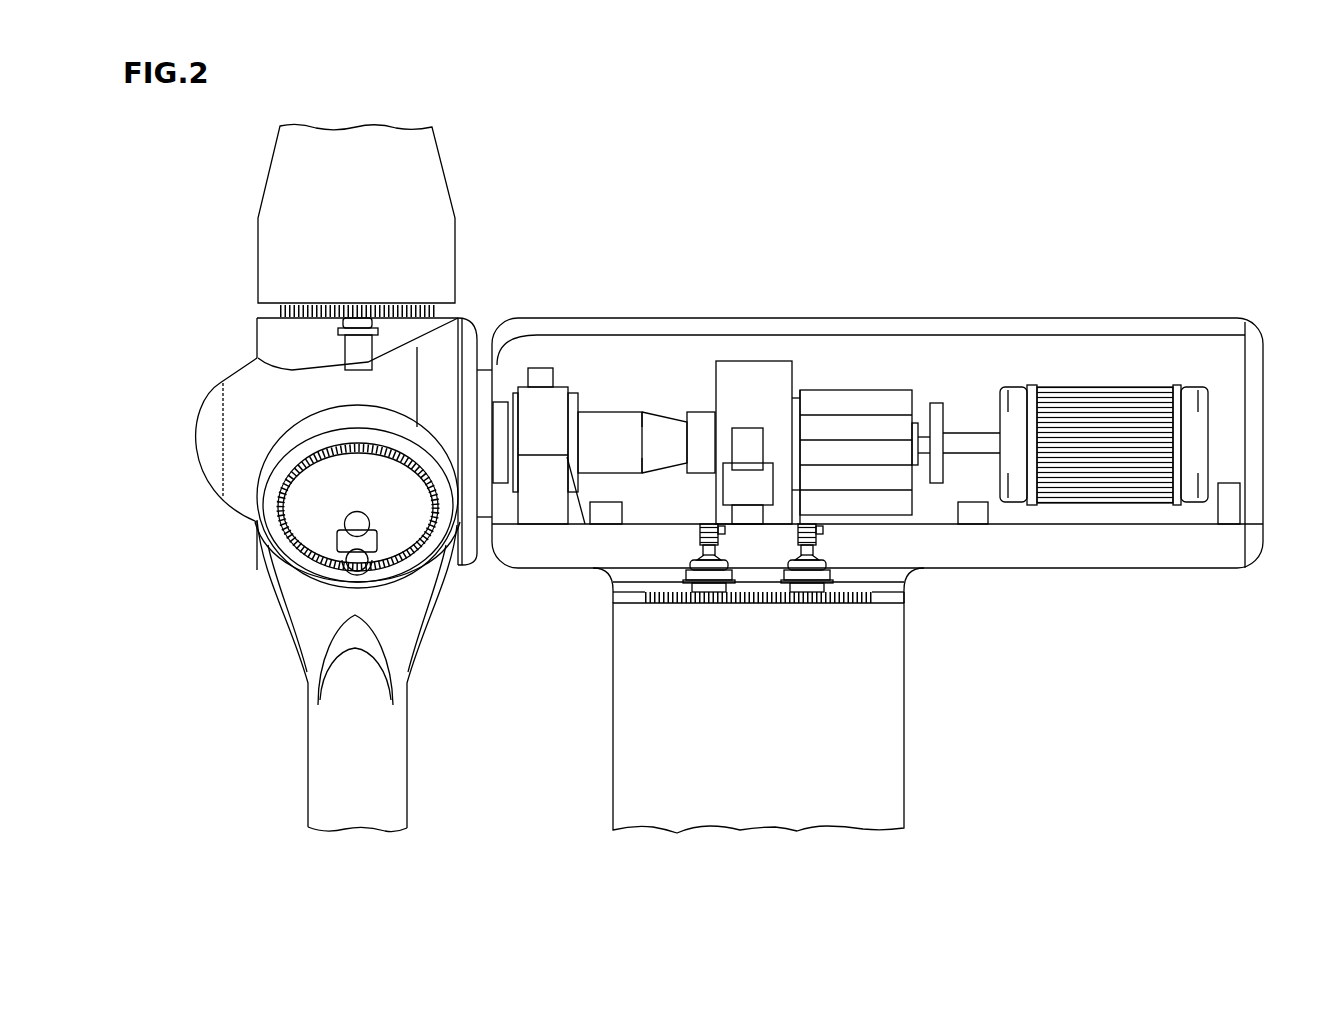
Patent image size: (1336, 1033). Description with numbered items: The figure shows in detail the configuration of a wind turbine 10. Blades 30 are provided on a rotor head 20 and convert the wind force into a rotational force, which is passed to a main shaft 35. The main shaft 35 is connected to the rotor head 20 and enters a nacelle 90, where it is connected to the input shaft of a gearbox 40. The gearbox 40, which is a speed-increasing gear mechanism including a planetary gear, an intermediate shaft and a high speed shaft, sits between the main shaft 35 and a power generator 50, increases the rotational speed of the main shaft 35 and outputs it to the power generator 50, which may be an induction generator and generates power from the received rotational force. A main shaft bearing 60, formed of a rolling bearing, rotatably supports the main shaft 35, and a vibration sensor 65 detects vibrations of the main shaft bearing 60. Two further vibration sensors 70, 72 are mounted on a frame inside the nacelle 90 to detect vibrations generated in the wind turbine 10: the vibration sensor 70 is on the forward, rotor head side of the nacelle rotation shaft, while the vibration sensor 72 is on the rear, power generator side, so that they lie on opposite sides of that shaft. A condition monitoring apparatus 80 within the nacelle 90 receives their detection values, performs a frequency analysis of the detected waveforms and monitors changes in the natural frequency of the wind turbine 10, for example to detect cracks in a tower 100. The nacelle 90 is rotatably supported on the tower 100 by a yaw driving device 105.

The wind turbine 10 is at (1191, 187).
The rotor head 20 is at (243, 400).
The blades 30 is at (407, 180).
The main shaft 35 is at (612, 432).
The gearbox 40 is at (805, 358).
The power generator 50 is at (1103, 412).
The main shaft bearing 60 is at (555, 405).
The vibration sensor 65 is at (541, 372).
The vibration sensor 70 is at (602, 515).
The vibration sensor 72 is at (975, 513).
The condition monitoring apparatus 80 is at (1232, 503).
The nacelle 90 is at (1020, 330).
The tower 100 is at (880, 743).
The yaw driving device 105 is at (914, 599).